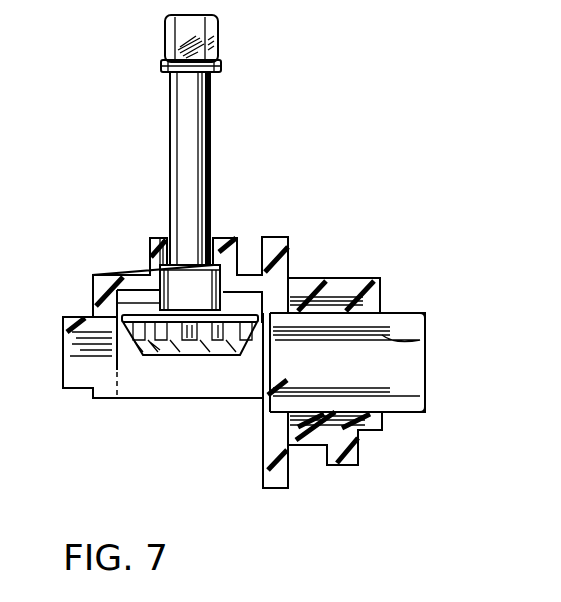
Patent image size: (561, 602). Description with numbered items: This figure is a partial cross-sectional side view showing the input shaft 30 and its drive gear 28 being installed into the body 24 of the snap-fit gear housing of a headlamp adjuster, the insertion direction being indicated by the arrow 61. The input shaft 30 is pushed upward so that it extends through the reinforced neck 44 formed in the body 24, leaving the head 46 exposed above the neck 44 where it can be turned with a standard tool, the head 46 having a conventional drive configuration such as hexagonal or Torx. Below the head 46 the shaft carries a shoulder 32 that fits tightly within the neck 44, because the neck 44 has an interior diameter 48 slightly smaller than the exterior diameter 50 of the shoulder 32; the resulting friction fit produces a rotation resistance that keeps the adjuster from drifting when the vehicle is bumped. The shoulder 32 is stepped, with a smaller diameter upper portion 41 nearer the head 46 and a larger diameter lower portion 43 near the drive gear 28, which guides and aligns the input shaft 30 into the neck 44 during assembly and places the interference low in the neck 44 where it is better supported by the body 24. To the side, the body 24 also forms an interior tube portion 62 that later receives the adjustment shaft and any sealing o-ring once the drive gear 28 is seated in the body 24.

The body 24 is at (95, 280).
The drive gear 28 is at (140, 350).
The input shaft 30 is at (192, 110).
The shoulder 32 is at (193, 262).
The smaller diameter upper portion 41 is at (205, 278).
The larger diameter lower portion 43 is at (173, 303).
The reinforced neck 44 is at (152, 258).
The head 46 is at (172, 45).
The interior diameter 48 is at (165, 238).
The exterior diameter 50 is at (205, 303).
The arrow 61 is at (193, 370).
The interior tube portion 62 is at (383, 333).